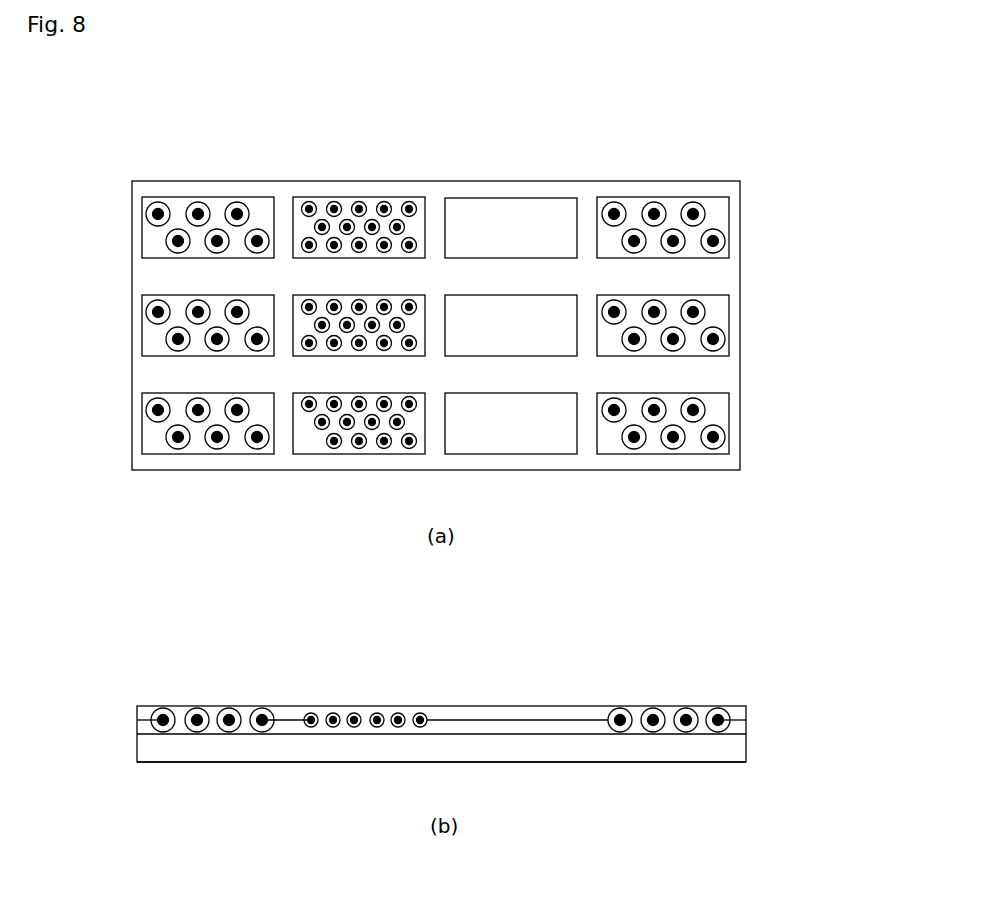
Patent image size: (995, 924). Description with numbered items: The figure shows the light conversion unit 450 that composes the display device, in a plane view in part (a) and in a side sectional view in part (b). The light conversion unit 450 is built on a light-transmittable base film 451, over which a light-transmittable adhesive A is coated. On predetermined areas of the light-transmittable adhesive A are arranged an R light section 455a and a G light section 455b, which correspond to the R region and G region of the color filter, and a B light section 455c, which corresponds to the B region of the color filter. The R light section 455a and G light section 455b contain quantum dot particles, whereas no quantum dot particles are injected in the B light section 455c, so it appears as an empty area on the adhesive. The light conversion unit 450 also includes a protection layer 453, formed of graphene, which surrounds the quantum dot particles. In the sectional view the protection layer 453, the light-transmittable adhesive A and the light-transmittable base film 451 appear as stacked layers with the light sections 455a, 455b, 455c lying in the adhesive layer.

The light conversion unit 450 is at (758, 189).
The light-transmittable base film 451 is at (738, 748).
The protection layer 453 is at (740, 714).
The R light section 455a is at (215, 208).
The G light section 455b is at (370, 208).
The B light section 455c is at (515, 208).
The light-transmittable adhesive A is at (738, 728).